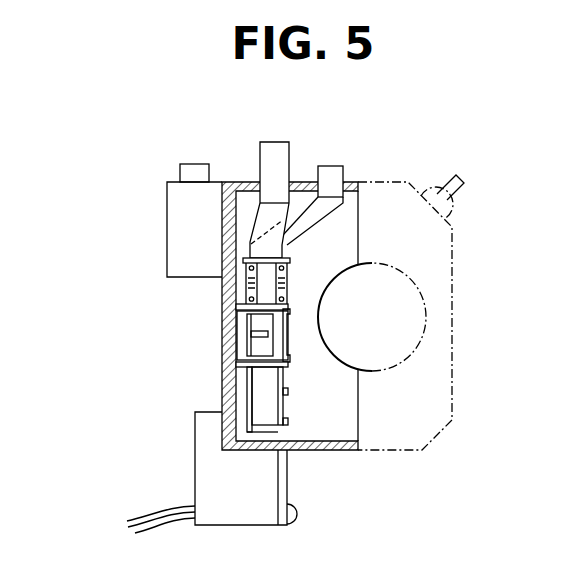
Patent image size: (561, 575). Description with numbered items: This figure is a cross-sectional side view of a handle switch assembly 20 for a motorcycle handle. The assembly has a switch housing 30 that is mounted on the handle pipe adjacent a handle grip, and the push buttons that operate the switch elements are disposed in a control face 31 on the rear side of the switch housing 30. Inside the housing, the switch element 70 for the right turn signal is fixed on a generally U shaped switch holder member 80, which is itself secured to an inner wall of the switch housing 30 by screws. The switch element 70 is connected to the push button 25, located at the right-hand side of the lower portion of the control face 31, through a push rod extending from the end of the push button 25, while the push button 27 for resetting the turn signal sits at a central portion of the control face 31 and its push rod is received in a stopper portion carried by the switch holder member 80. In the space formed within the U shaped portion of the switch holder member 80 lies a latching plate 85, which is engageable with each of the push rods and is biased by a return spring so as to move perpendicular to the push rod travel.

The handle switch assembly 20 is at (408, 320).
The push button 25 is at (278, 142).
The push button 27 is at (340, 166).
The switch housing 30 is at (344, 452).
The control face 31 is at (397, 182).
The switch element 70 is at (262, 404).
The switch holder member 80 is at (266, 369).
The latching plate 85 is at (262, 330).